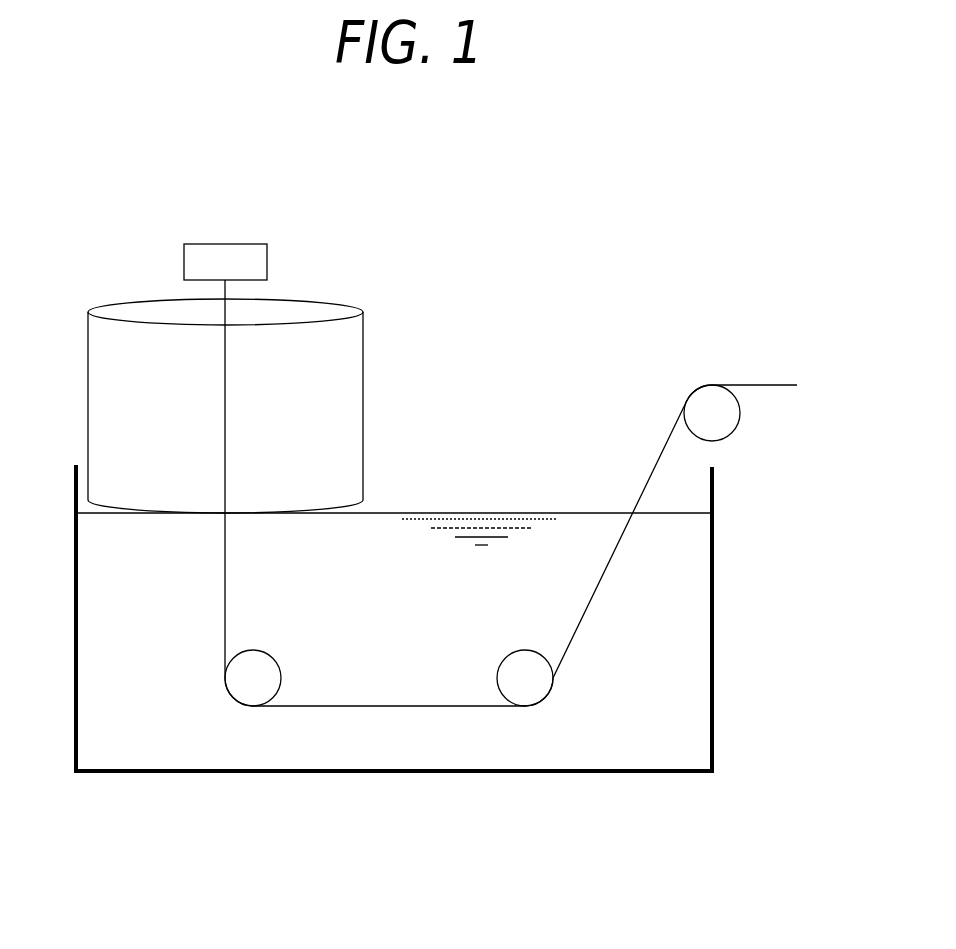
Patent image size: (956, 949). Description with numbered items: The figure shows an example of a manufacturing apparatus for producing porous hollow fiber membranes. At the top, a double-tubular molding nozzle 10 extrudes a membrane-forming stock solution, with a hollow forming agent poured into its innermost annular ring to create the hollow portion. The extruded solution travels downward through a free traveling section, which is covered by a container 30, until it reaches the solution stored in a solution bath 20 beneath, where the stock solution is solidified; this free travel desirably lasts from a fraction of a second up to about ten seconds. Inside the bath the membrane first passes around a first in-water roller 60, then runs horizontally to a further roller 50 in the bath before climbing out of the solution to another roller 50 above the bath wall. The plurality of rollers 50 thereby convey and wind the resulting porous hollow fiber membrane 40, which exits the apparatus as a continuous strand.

The double-tubular molding nozzle 10 is at (223, 244).
The solution bath 20 is at (714, 652).
The container 30 is at (363, 370).
The porous hollow fiber membrane 40 is at (758, 385).
The roller 50 is at (725, 420).
The first in-water roller 60 is at (253, 660).